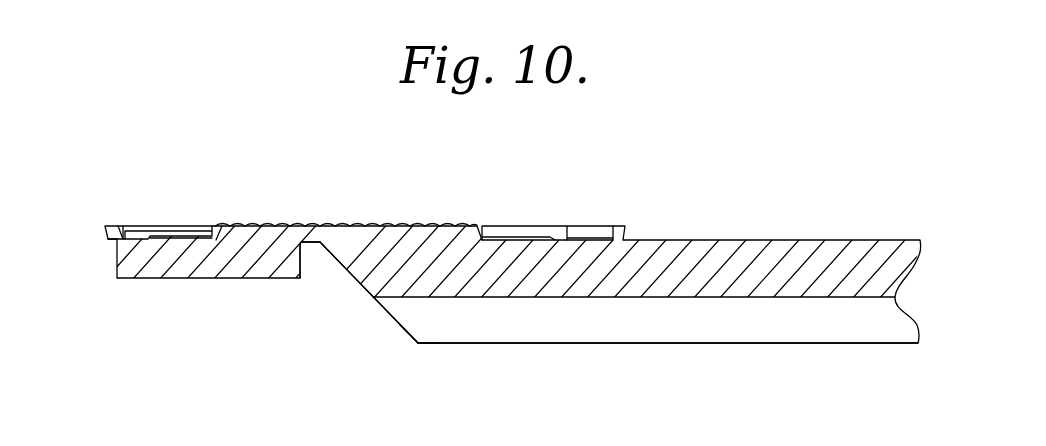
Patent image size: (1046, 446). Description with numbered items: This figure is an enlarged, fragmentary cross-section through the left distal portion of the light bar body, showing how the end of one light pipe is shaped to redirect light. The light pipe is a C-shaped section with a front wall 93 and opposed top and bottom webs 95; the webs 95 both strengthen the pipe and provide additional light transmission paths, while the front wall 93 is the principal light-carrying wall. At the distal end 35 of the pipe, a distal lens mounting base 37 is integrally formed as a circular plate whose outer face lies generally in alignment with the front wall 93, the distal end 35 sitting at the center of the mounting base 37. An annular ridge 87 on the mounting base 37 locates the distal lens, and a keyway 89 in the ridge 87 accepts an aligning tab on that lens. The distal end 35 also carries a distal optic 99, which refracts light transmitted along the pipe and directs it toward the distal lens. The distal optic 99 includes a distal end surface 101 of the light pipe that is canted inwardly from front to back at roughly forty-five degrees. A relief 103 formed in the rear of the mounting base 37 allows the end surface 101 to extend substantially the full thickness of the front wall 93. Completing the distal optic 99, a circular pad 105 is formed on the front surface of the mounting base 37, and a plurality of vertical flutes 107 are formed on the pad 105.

The front wall 93 is at (750, 240).
The top and bottom webs 95 is at (668, 345).
The distal end surface 101 is at (407, 341).
The distal end 35 is at (362, 287).
The relief 103 is at (302, 248).
The vertical flutes 107 is at (400, 228).
The circular pad 105 is at (205, 227).
The distal lens mounting base 37 is at (163, 240).
The annular ridge 87 is at (102, 227).
The keyway 89 is at (590, 225).
The distal optic 99 is at (558, 172).